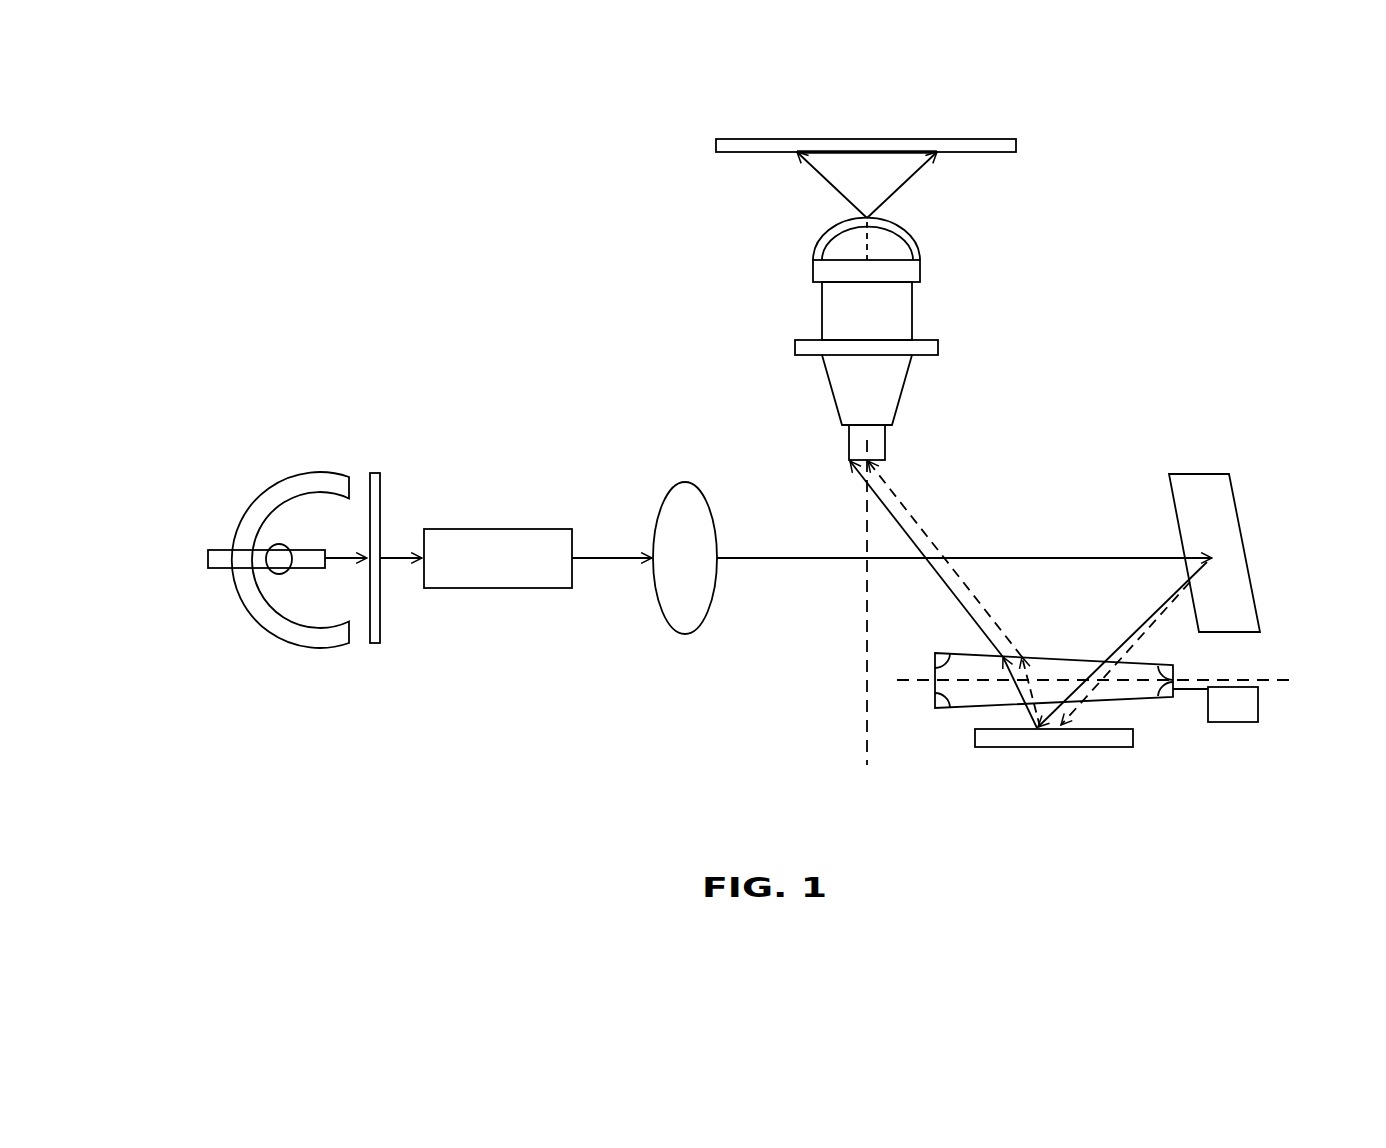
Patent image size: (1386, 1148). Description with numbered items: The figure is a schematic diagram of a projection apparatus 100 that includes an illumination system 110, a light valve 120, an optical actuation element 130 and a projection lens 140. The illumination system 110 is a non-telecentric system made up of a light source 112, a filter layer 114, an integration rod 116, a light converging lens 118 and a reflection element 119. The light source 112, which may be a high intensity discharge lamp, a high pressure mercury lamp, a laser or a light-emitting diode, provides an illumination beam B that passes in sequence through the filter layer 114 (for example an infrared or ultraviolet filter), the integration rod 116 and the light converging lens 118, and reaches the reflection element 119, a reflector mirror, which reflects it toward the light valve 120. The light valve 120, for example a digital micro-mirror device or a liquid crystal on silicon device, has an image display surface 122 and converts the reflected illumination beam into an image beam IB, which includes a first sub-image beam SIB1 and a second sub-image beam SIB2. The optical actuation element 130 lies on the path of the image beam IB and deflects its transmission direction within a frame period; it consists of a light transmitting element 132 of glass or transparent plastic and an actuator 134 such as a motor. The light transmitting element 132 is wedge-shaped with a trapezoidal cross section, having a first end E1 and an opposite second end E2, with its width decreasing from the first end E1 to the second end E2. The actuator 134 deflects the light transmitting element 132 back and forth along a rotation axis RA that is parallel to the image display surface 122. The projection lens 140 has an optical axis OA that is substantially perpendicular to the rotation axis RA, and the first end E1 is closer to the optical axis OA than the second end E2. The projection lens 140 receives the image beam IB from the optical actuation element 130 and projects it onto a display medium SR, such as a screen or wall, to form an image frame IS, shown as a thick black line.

The projection apparatus 100 is at (1360, 836).
The illumination system 110 is at (292, 420).
The light source 112 is at (275, 614).
The filter layer 114 is at (377, 645).
The integration rod 116 is at (493, 575).
The light converging lens 118 is at (682, 612).
The reflection element 119 is at (1228, 490).
The light valve 120 is at (1125, 735).
The image display surface 122 is at (1020, 727).
The optical actuation element 130 is at (348, 238).
The light transmitting element 132 is at (1038, 654).
The actuator 134 is at (1247, 713).
The projection lens 140 is at (905, 303).
The illumination beam B is at (350, 562).
The image beam IB is at (347, 145).
The first sub-image beam SIB1 is at (922, 527).
The second sub-image beam SIB2 is at (883, 503).
The image frame IS is at (842, 151).
The display medium SR is at (1017, 143).
The first end E1 is at (948, 652).
The second end E2 is at (1159, 658).
The rotation axis RA is at (925, 680).
The optical axis OA is at (865, 743).